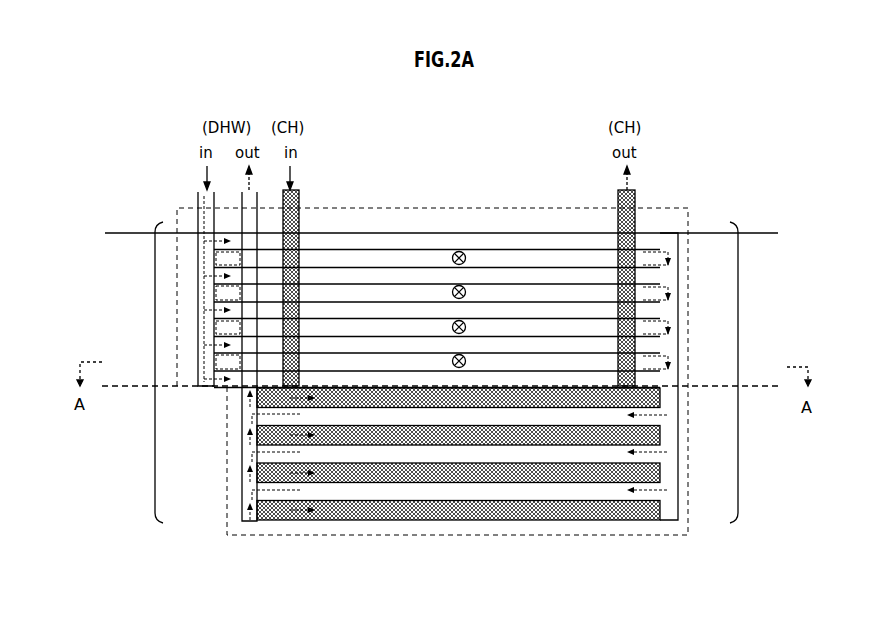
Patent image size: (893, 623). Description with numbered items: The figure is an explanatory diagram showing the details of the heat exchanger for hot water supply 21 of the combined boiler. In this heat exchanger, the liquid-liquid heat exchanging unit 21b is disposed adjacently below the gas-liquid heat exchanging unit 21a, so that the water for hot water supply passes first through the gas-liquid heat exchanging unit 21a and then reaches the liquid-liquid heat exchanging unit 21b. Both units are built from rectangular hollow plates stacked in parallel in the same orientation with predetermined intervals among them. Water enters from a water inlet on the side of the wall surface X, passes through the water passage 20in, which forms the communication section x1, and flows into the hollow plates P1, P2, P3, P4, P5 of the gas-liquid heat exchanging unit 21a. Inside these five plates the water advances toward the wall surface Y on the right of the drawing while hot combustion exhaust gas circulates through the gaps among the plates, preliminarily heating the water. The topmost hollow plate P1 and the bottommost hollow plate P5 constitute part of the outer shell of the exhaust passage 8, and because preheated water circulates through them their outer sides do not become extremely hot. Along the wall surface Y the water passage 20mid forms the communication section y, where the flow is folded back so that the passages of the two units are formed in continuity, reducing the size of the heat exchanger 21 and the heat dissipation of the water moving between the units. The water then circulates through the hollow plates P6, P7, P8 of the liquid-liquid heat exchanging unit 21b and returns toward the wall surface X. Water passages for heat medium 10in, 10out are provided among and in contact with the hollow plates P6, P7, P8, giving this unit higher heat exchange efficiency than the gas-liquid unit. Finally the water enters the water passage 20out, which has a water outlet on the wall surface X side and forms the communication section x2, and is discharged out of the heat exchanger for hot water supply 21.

The heat exchanger for hot water supply 21 is at (689, 126).
The gas-liquid heat exchanging unit 21a is at (437, 205).
The liquid-liquid heat exchanging unit 21b is at (300, 542).
The water passage 20in is at (198, 199).
The water passage 20out is at (242, 467).
The water passage 20mid is at (680, 518).
The water passage for heat medium 10in is at (300, 200).
The water passage for heat medium 10out is at (636, 200).
The exhaust passage 8 is at (757, 230).
The hollow plate P1 is at (508, 238).
The hollow plate P2 is at (648, 268).
The hollow plate P3 is at (648, 302).
The hollow plate P4 is at (648, 337).
The hollow plate P5 is at (648, 372).
The hollow plate P6 is at (660, 416).
The hollow plate P7 is at (660, 453).
The hollow plate P8 is at (660, 491).
The wall surface X is at (147, 372).
The wall surface Y is at (744, 372).
The communication section x1 is at (200, 388).
The communication section x2 is at (245, 535).
The communication section y is at (665, 522).